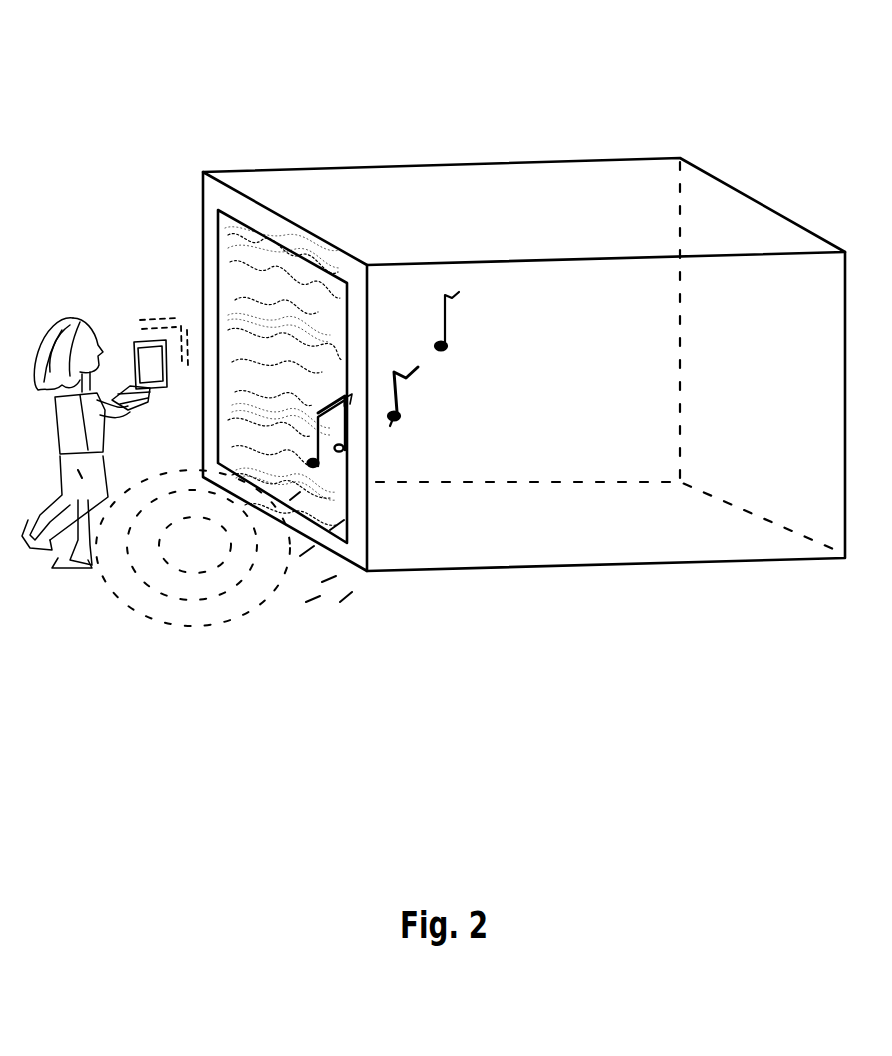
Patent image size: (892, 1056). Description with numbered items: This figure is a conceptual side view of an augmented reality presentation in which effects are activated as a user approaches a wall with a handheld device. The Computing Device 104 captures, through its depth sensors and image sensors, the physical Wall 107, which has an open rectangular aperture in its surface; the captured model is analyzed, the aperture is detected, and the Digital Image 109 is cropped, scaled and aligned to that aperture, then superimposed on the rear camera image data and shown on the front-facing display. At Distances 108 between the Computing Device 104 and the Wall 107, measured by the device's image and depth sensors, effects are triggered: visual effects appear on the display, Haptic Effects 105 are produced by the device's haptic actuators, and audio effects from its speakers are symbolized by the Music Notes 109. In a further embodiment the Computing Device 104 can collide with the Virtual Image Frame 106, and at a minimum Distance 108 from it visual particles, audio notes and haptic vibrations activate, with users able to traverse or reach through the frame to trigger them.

The computing device 104 is at (143, 354).
The haptic effects 105 is at (178, 320).
The virtual image frame 106 is at (263, 297).
The wall 107 is at (343, 265).
The distances 108 is at (130, 567).
The music notes 109 is at (314, 462).